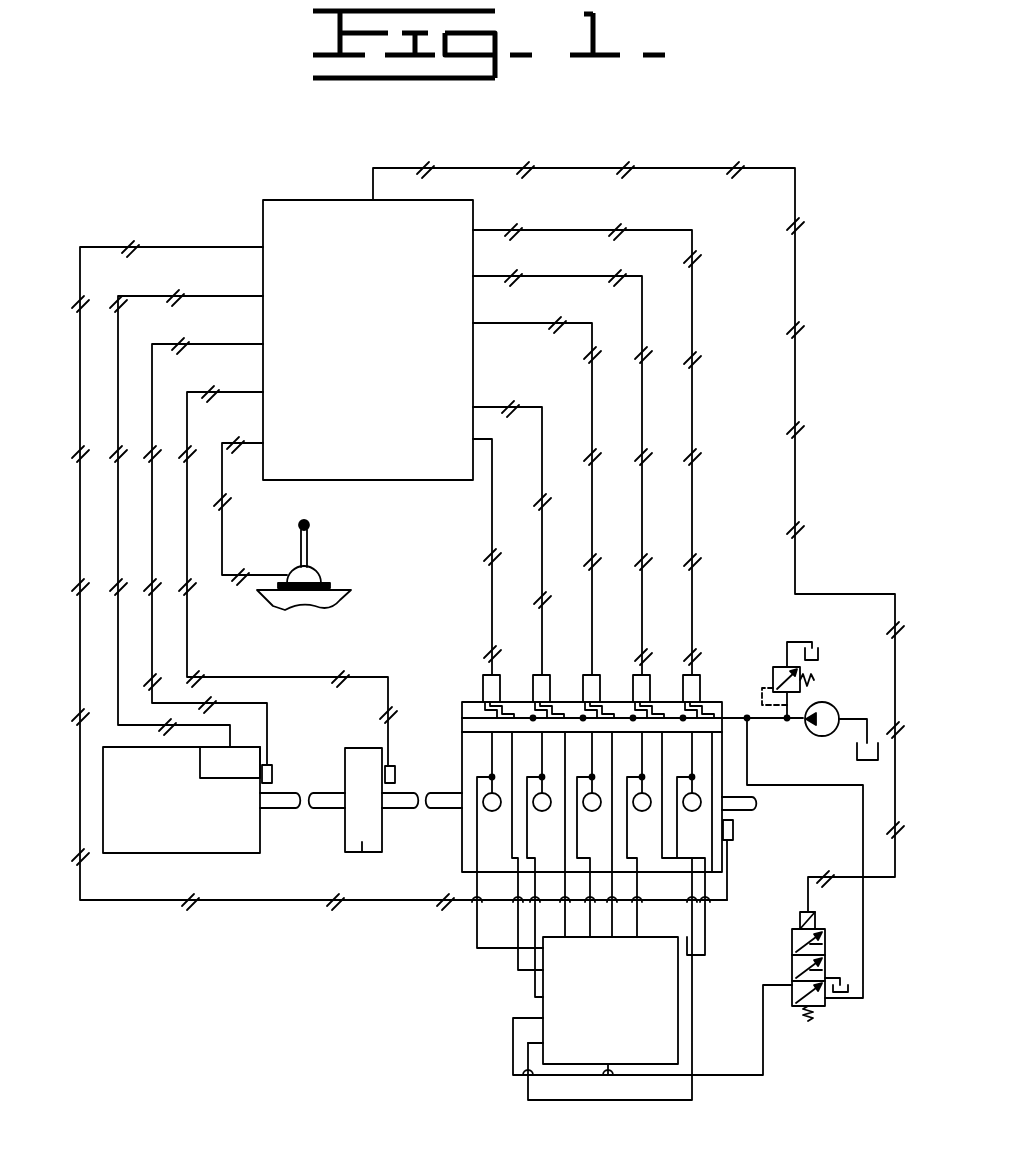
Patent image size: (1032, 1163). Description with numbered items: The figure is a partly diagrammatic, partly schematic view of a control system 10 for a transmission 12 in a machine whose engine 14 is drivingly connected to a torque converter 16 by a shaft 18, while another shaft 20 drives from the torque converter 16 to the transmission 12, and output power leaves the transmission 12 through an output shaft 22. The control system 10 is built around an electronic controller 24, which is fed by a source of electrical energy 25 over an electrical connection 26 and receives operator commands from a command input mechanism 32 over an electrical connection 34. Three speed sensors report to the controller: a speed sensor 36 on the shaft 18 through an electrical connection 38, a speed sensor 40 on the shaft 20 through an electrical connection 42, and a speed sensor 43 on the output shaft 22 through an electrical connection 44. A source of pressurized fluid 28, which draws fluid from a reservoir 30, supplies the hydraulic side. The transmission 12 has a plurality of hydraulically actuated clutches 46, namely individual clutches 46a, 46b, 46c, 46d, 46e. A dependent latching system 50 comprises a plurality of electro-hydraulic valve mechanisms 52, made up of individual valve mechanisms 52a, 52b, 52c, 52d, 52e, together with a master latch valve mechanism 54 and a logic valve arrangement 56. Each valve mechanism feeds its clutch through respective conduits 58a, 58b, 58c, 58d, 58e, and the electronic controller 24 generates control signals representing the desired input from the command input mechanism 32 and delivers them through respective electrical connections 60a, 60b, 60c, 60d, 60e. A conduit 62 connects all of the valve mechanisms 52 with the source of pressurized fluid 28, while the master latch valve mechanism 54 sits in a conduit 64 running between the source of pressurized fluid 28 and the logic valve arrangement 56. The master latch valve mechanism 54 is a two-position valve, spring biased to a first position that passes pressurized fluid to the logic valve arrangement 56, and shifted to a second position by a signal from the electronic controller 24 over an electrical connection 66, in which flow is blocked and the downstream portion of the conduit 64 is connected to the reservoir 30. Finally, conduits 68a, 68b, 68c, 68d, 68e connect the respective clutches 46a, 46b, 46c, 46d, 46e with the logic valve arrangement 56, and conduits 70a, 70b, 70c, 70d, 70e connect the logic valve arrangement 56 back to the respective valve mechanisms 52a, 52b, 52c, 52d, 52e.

The control system 10 is at (150, 154).
The transmission 12 is at (427, 640).
The engine 14 is at (170, 848).
The torque converter 16 is at (362, 852).
The shaft 18 is at (272, 808).
The shaft 20 is at (400, 795).
The output shaft 22 is at (757, 802).
The electronic controller 24 is at (385, 254).
The source of electrical energy 25 is at (217, 760).
The electrical connection 26 is at (118, 484).
The source of pressurized fluid 28 is at (825, 705).
The reservoir 30 is at (857, 752).
The command input mechanism 32 is at (312, 578).
The electrical connection 34 is at (222, 482).
The speed sensor 36 is at (272, 773).
The electrical connection 38 is at (152, 396).
The speed sensor 40 is at (390, 766).
The electrical connection 42 is at (235, 677).
The speed sensor 43 is at (735, 834).
The electrical connection 44 is at (80, 555).
The hydraulically actuated clutches 46 is at (416, 830).
The hydraulically actuated clutch 46a is at (485, 795).
The hydraulically actuated clutch 46b is at (540, 795).
The hydraulically actuated clutch 46c is at (588, 812).
The hydraulically actuated clutch 46d is at (647, 810).
The hydraulically actuated clutch 46e is at (697, 810).
The dependent latching system 50 is at (822, 1076).
The electro-hydraulic valve mechanisms 52 is at (453, 606).
The electro-hydraulic valve mechanism 52a is at (482, 683).
The electro-hydraulic valve mechanism 52b is at (545, 665).
The electro-hydraulic valve mechanism 52c is at (585, 660).
The electro-hydraulic valve mechanism 52d is at (643, 655).
The electro-hydraulic valve mechanism 52e is at (700, 690).
The master latch valve mechanism 54 is at (815, 1005).
The logic valve arrangement 56 is at (622, 1051).
The conduit 58a is at (480, 740).
The conduit 58b is at (517, 692).
The conduit 58c is at (567, 692).
The conduit 58d is at (617, 692).
The conduit 58e is at (673, 692).
The electrical connection 60a is at (542, 522).
The electrical connection 60b is at (492, 553).
The electrical connection 60c is at (592, 398).
The electrical connection 60d is at (645, 405).
The electrical connection 60e is at (692, 323).
The conduit 62 is at (733, 718).
The conduit 64 is at (863, 938).
The electrical connection 66 is at (795, 490).
The conduit 68a is at (470, 830).
The conduit 68b is at (513, 962).
The conduit 68c is at (530, 985).
The conduit 68d is at (513, 1035).
The conduit 68e is at (525, 1087).
The conduit 70a is at (565, 920).
The conduit 70b is at (590, 925).
The conduit 70c is at (615, 925).
The conduit 70d is at (702, 958).
The conduit 70e is at (708, 917).